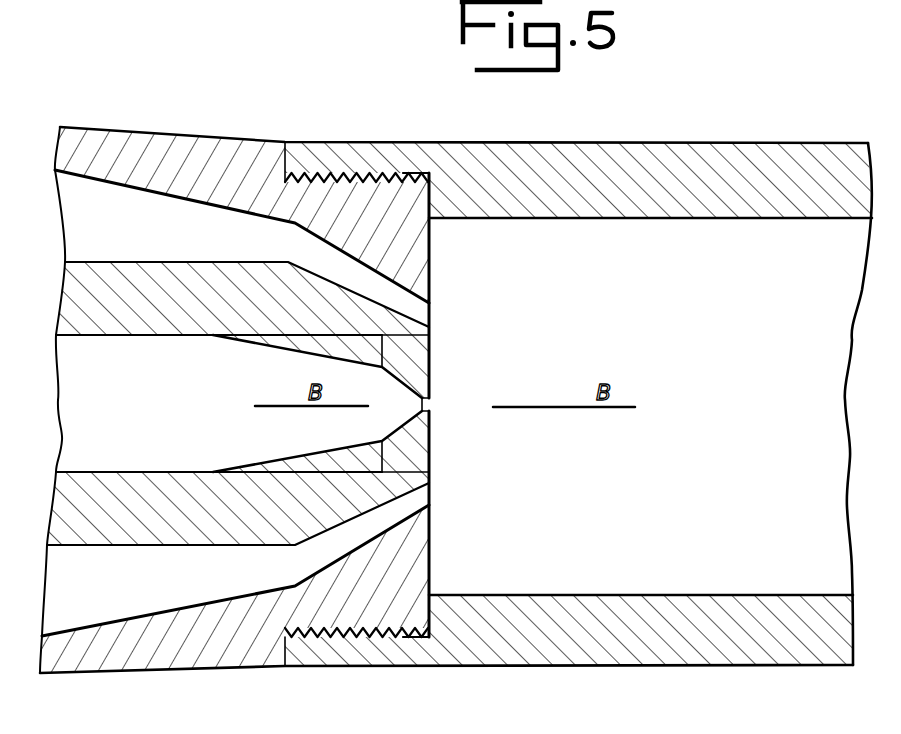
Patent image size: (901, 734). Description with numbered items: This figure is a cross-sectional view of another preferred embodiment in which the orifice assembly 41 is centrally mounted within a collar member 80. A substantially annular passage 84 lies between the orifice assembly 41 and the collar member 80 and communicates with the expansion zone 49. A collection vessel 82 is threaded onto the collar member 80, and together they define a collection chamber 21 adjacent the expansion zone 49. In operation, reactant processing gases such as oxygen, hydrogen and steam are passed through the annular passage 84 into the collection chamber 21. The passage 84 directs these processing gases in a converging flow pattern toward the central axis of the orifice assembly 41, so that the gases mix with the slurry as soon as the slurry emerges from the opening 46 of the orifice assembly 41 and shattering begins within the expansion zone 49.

The collar member 80 is at (207, 139).
The collection vessel 82 is at (692, 143).
The annular passage 84 is at (196, 245).
The orifice assembly 41 is at (440, 341).
The opening 46 is at (431, 402).
The expansion zone 49 is at (490, 451).
The collection chamber 21 is at (760, 381).